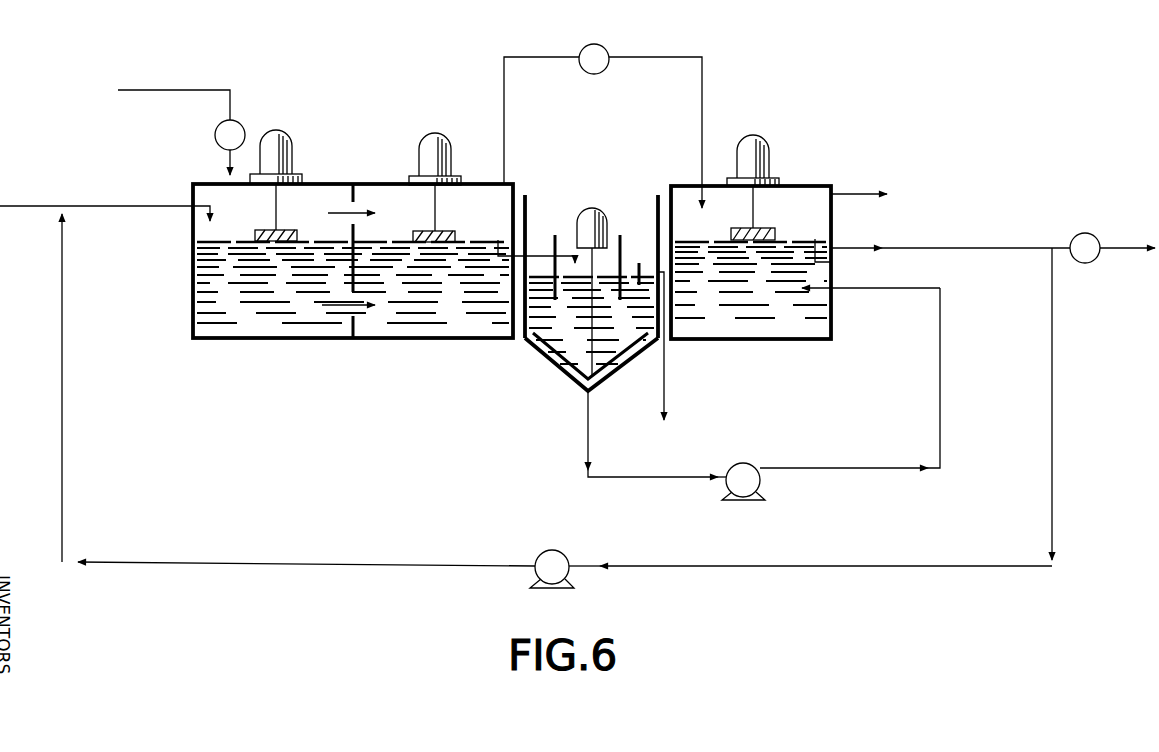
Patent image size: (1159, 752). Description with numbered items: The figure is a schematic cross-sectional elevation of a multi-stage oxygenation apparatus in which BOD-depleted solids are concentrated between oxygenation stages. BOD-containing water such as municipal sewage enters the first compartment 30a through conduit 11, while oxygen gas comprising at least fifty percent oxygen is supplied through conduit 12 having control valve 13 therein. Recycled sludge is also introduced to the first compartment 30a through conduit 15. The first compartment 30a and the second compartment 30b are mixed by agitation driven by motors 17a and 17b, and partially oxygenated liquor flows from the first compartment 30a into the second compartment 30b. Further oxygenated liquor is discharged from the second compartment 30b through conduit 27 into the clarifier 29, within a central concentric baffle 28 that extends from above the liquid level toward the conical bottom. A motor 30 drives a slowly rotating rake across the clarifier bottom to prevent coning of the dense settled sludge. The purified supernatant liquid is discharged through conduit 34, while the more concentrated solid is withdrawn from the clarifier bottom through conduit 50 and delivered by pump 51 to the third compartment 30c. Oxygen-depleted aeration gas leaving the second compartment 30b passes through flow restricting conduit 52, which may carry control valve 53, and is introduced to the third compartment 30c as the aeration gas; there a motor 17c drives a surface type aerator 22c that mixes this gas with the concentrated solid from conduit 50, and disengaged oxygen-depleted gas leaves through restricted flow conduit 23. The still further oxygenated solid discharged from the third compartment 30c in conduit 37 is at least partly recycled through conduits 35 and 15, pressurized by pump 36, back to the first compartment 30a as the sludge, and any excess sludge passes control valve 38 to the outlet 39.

The conduit 11 is at (116, 206).
The conduit 12 is at (156, 90).
The control valve 13 is at (215, 135).
The conduit 15 is at (263, 563).
The motor 17a is at (279, 134).
The motor 17b is at (436, 138).
The motor 17c is at (753, 139).
The surface type aerator 22c is at (776, 240).
The restricted flow conduit 23 is at (855, 194).
The conduit 27 is at (539, 253).
The central concentric baffle 28 is at (623, 238).
The clarifier 29 is at (530, 323).
The motor 30 is at (591, 208).
The first compartment 30a is at (205, 320).
The second compartment 30b is at (438, 332).
The third compartment 30c is at (789, 330).
The conduit 34 is at (670, 388).
The conduit 35 is at (1049, 395).
The pump 36 is at (550, 550).
The conduit 37 is at (855, 248).
The control valve 38 is at (1082, 234).
The outlet 39 is at (1118, 254).
The conduit 50 is at (649, 478).
The pump 51 is at (744, 463).
The flow restricting conduit 52 is at (530, 57).
The control valve 53 is at (597, 44).